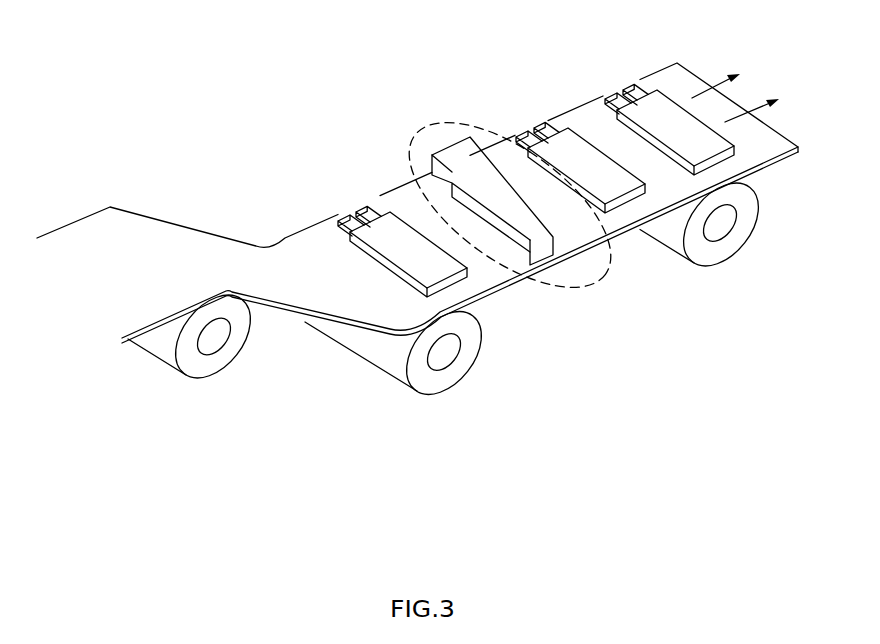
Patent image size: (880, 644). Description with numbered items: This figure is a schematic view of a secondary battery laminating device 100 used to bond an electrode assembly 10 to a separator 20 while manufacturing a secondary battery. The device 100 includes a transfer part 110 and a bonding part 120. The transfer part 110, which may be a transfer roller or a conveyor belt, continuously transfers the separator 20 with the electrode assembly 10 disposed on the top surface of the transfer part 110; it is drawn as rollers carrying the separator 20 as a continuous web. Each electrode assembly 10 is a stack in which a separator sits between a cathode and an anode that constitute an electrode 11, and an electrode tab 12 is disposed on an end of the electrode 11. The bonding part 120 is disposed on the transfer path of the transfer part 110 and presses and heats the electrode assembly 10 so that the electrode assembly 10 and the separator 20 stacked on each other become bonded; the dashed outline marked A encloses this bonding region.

The secondary battery laminating device 100 is at (146, 80).
The electrode assembly 10 is at (505, 169).
The electrode 11 is at (367, 230).
The electrode tab 12 is at (373, 208).
The separator 20 is at (194, 248).
The transfer part 110 is at (205, 363).
The bonding part 120 is at (458, 153).
The region A is at (597, 280).